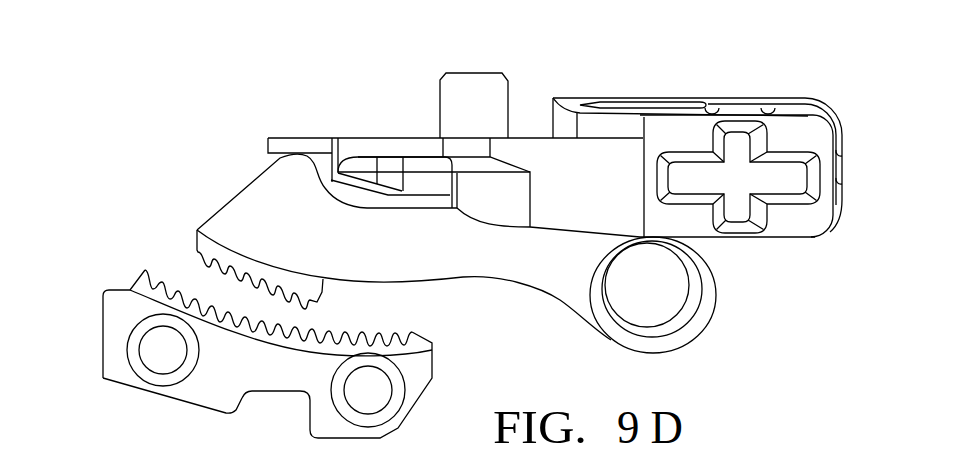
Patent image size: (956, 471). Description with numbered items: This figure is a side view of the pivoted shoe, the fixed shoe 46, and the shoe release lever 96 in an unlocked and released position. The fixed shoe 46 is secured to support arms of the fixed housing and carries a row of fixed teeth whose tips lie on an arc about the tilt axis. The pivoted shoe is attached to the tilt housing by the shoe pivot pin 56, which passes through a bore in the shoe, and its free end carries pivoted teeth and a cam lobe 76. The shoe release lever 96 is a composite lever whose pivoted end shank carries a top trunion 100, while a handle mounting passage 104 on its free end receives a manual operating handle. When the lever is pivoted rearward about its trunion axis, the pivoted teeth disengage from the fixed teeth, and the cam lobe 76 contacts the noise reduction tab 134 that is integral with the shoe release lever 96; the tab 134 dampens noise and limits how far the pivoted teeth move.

The fixed shoe 46 is at (207, 397).
The shoe pivot pin 56 is at (667, 298).
The cam lobe 76 is at (277, 160).
The shoe release lever 96 is at (730, 102).
The top trunion 100 is at (440, 93).
The handle mounting passage 104 is at (777, 183).
The noise reduction tab 134 is at (295, 140).